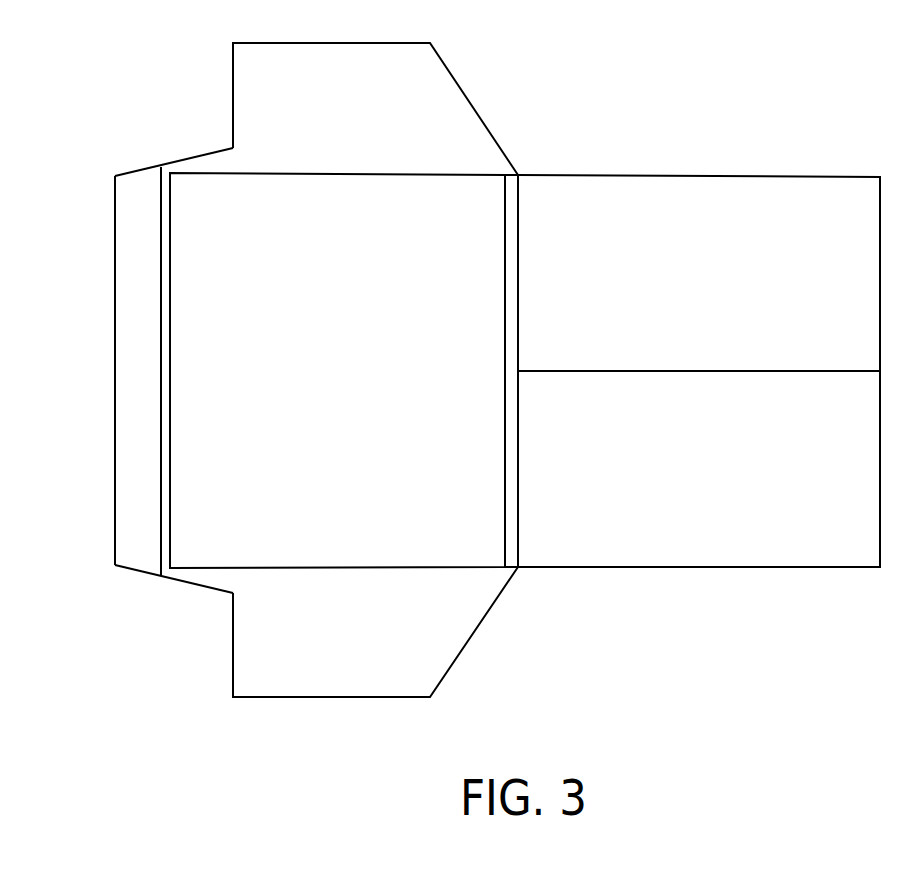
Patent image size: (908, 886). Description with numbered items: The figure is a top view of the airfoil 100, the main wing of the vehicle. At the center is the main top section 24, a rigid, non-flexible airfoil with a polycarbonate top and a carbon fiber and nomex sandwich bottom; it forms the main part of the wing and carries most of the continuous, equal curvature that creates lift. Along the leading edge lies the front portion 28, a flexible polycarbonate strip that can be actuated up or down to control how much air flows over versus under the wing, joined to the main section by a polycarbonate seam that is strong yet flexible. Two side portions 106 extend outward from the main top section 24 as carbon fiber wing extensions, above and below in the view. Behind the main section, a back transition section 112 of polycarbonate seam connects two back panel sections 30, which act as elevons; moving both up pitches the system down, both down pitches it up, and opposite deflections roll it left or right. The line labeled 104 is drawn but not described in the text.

The airfoil 100 is at (132, 128).
The main top section 24 is at (348, 378).
The front portion 28 is at (135, 523).
The back panel sections 30 is at (700, 288).
The fold line 104 is at (165, 545).
The side portions 106 is at (362, 122).
The back transition section 112 is at (510, 227).